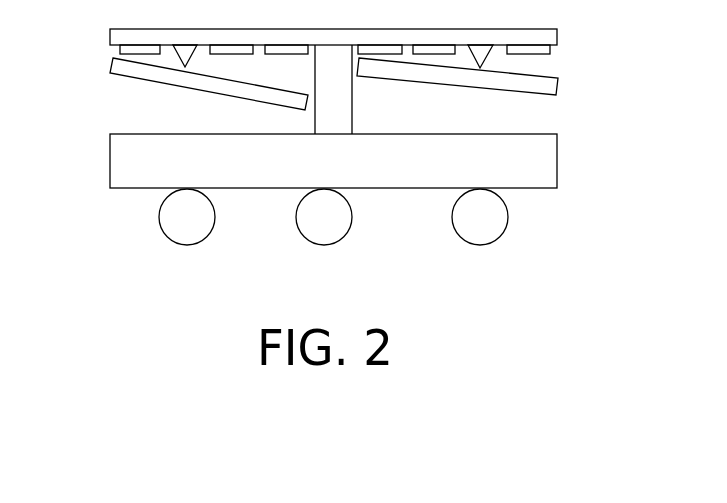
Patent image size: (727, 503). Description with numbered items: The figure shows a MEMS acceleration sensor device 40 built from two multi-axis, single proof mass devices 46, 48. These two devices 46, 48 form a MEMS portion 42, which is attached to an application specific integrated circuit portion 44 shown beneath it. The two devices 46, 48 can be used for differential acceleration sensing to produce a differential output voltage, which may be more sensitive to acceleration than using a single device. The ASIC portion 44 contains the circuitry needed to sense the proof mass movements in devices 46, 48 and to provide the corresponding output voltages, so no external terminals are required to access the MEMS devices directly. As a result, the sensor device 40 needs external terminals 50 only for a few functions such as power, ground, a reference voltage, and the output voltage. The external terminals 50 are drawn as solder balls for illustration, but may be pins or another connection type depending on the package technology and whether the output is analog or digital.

The MEMS acceleration sensor device 40 is at (610, 218).
The MEMS portion 42 is at (95, 22).
The application specific integrated circuit (ASIC) portion 44 is at (95, 133).
The multi-axis, single proof mass, device 46 is at (172, 78).
The multi-axis, single proof mass, device 48 is at (435, 75).
The external terminals 50 is at (188, 232).